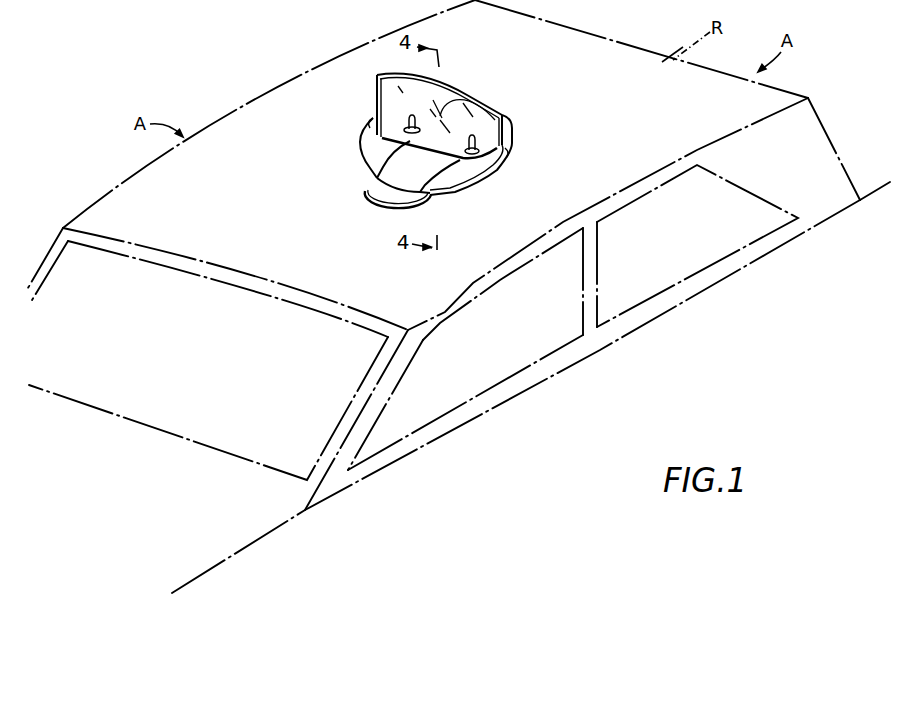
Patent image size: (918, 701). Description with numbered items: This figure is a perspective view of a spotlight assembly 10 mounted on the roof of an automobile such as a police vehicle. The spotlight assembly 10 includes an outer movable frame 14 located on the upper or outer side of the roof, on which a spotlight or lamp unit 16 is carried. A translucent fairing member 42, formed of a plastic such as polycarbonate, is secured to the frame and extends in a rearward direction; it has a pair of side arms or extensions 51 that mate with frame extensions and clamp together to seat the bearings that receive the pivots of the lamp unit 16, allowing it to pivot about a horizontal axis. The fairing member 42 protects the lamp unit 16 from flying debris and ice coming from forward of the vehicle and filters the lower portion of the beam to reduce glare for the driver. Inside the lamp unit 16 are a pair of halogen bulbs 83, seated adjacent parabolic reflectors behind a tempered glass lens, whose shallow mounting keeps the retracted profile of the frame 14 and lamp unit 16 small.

The spotlight assembly 10 is at (474, 78).
The outer movable frame 14 is at (384, 180).
The lamp unit 16 is at (508, 123).
The fairing member 42 is at (365, 148).
The side arms 51 is at (370, 115).
The halogen bulbs 83 is at (410, 117).